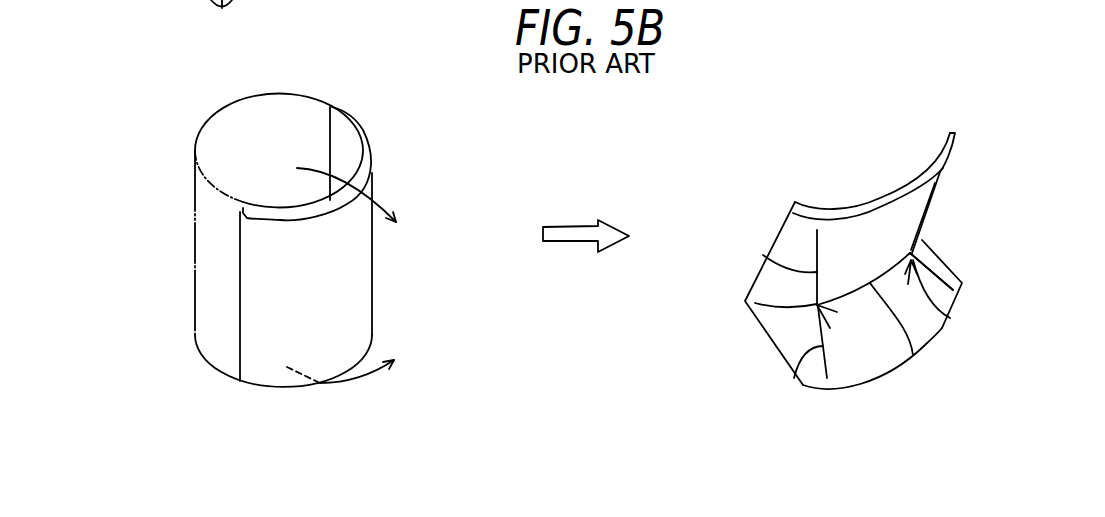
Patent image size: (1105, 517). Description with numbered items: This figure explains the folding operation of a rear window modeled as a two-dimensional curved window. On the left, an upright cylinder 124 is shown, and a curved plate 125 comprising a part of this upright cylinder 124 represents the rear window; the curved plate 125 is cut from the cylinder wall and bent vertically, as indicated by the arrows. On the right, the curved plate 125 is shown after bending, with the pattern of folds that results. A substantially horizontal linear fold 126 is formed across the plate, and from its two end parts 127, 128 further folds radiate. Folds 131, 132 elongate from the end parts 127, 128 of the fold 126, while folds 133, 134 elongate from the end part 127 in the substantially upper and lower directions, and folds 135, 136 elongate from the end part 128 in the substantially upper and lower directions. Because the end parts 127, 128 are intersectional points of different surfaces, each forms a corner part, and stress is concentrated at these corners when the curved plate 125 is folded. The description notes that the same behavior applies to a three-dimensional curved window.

The upright cylinder 124 is at (195, 151).
The curved plate 125 is at (366, 130).
The substantially horizontal linear fold 126 is at (914, 355).
The end part 127 is at (818, 307).
The end part 128 is at (958, 298).
The fold 131 is at (756, 303).
The fold 132 is at (922, 247).
The fold 133 is at (765, 257).
The fold 134 is at (794, 378).
The fold 135 is at (924, 220).
The fold 136 is at (942, 273).